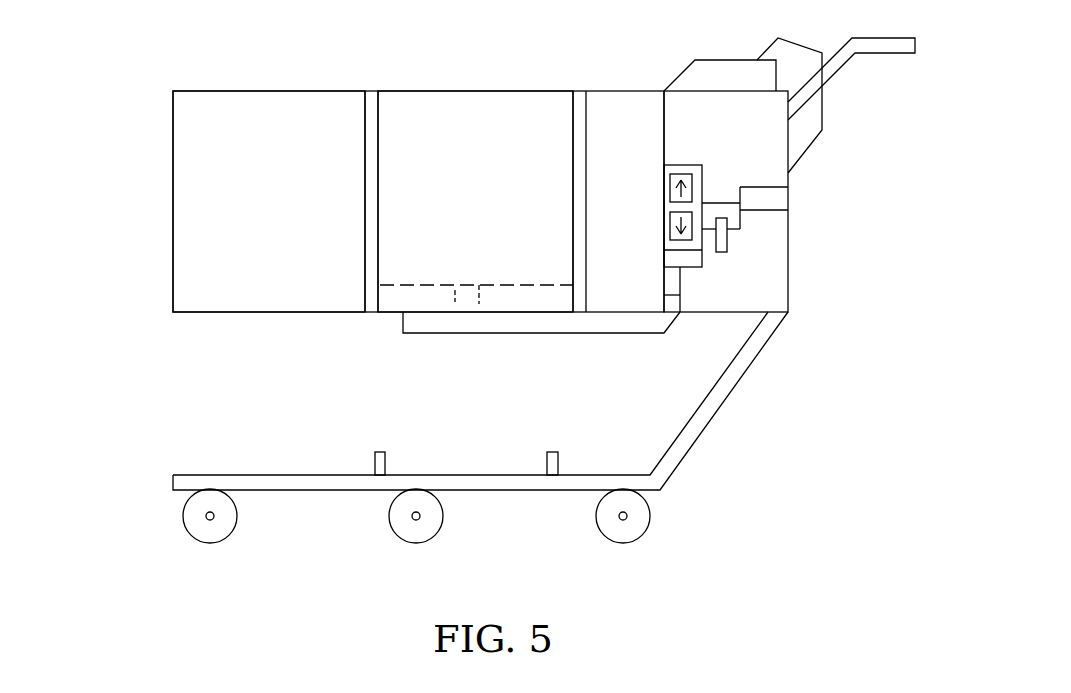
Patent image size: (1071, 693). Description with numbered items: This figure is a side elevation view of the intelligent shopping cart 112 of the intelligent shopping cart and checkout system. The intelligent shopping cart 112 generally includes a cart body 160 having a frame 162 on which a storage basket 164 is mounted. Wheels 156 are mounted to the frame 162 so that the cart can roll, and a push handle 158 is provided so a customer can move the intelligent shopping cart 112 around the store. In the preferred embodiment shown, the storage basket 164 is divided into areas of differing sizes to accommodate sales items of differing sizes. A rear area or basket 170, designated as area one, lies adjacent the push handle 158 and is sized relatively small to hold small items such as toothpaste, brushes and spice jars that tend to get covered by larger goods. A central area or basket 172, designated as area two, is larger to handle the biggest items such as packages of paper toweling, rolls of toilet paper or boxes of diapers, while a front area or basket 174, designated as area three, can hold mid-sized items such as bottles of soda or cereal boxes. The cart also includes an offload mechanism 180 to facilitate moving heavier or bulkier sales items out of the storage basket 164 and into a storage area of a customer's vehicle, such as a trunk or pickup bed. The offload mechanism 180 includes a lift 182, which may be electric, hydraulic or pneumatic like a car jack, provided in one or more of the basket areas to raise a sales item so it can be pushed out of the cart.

The intelligent shopping cart 112 is at (112, 78).
The wheels 156 is at (190, 525).
The push handle 158 is at (902, 43).
The cart body 160 is at (842, 286).
The frame 162 is at (740, 401).
The storage basket 164 is at (205, 82).
The rear area or basket 170 is at (711, 40).
The central area or basket 172 is at (458, 82).
The front area or basket 174 is at (321, 82).
The offload mechanism 180 is at (413, 274).
The lift 182 is at (510, 282).